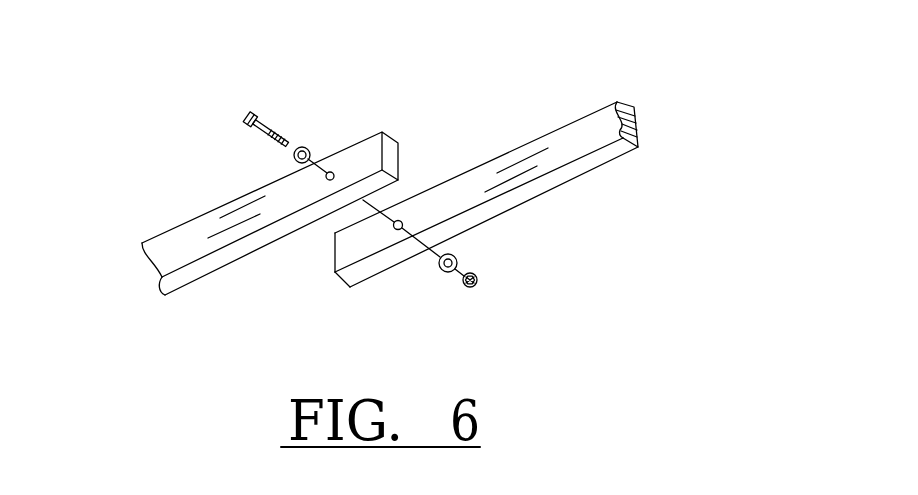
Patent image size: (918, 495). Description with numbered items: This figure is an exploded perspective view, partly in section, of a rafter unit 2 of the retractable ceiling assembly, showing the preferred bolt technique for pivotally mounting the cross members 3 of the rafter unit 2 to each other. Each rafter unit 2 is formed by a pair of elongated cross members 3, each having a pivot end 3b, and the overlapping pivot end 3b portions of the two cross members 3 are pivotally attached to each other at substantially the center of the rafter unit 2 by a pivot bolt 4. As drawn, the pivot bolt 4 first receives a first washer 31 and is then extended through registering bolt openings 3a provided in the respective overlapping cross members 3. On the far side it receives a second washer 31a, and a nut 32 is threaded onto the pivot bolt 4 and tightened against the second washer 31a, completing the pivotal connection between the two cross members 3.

The rafter unit 2 is at (164, 212).
The cross member 3 is at (248, 223).
The bolt opening 3a is at (505, 118).
The pivot end 3b is at (412, 205).
The pivot bolt 4 is at (257, 111).
The first washer 31 is at (304, 147).
The second washer 31a is at (456, 258).
The nut 32 is at (475, 285).